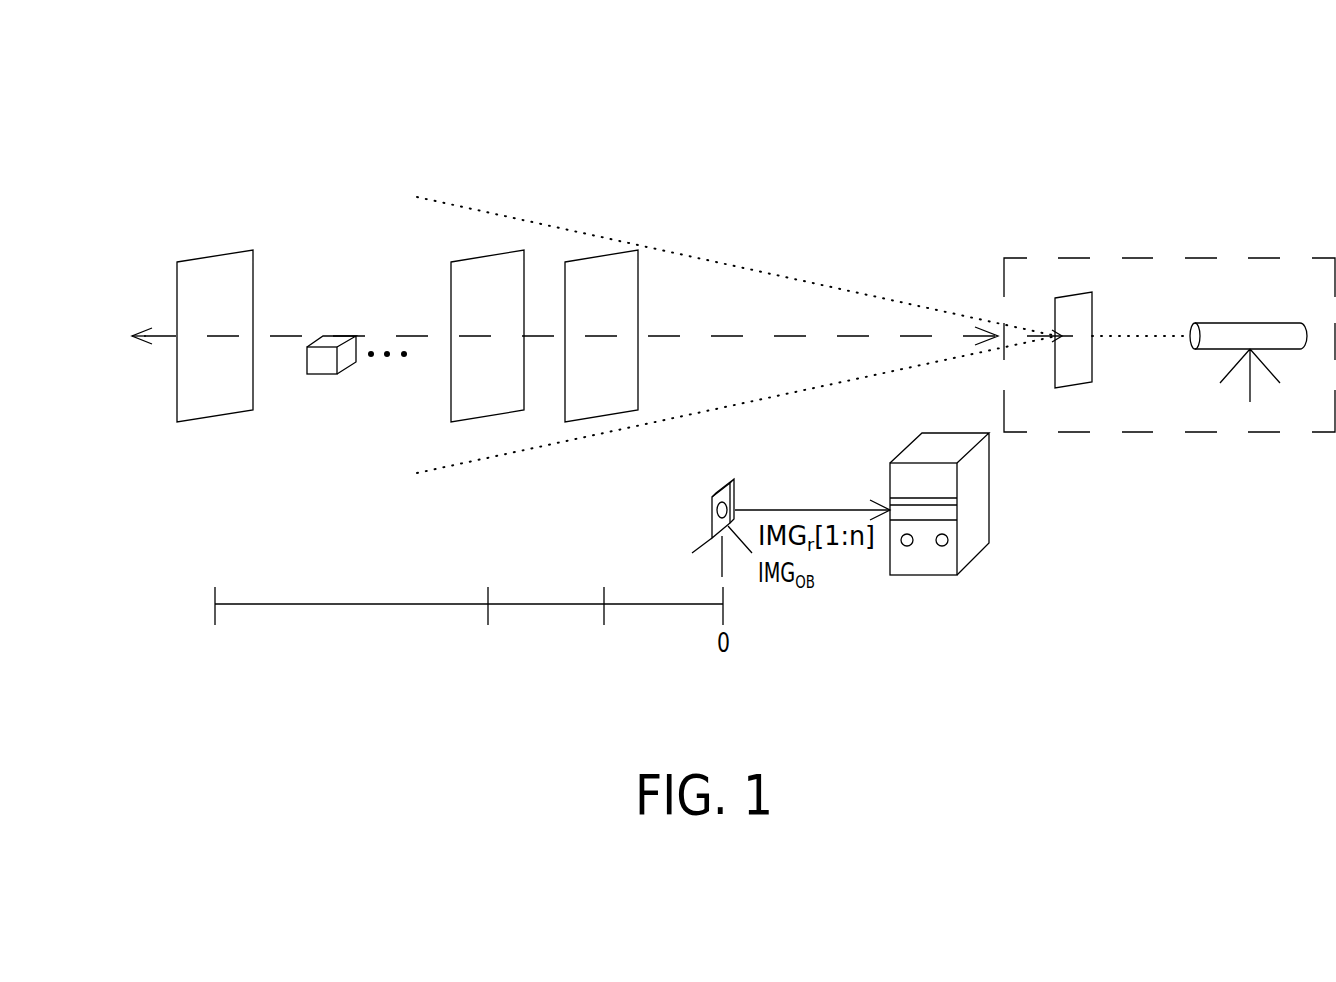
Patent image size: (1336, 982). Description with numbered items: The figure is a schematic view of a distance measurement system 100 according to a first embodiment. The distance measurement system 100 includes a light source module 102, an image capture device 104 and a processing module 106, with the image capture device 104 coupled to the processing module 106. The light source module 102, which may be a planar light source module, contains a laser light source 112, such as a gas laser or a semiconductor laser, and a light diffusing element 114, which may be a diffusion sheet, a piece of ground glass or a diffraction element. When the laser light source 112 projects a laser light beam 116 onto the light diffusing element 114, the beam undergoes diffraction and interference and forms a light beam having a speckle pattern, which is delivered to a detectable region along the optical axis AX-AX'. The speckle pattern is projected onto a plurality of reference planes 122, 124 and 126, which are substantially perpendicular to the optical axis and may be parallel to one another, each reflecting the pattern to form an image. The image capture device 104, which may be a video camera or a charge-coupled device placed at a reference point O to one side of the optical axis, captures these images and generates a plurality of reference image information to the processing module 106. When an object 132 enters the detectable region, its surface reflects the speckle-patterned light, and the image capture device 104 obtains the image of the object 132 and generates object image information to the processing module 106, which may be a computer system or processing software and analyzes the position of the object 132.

The distance measurement system 100 is at (132, 150).
The light source module 102 is at (1140, 258).
The image capture device 104 is at (745, 474).
The processing module 106 is at (983, 492).
The laser light source 112 is at (1250, 323).
The light diffusing element 114 is at (1077, 292).
The laser light beam 116 is at (1140, 336).
The reference plane 122 is at (603, 252).
The reference plane 124 is at (490, 252).
The reference plane 126 is at (218, 252).
The object 132 is at (334, 340).